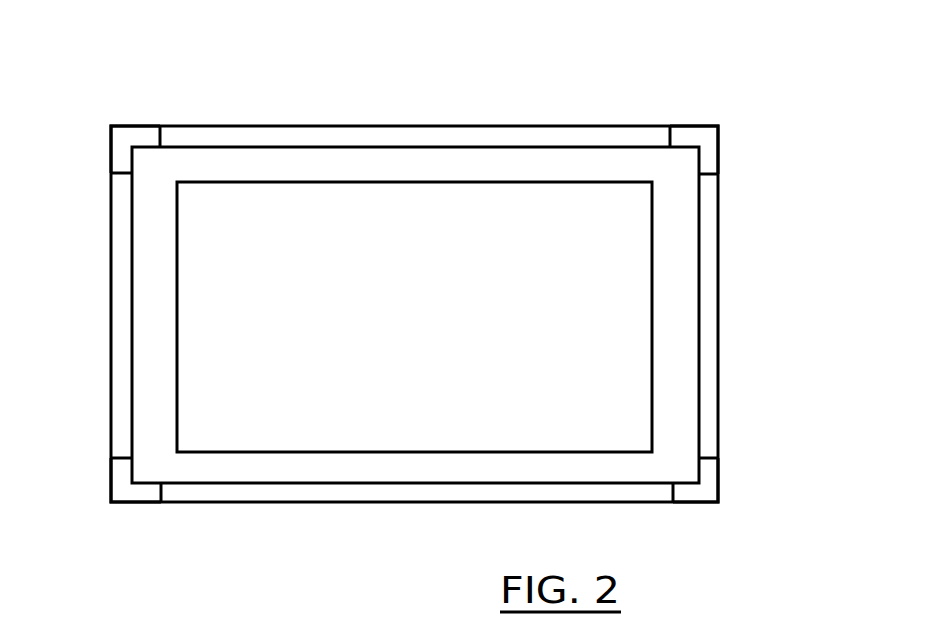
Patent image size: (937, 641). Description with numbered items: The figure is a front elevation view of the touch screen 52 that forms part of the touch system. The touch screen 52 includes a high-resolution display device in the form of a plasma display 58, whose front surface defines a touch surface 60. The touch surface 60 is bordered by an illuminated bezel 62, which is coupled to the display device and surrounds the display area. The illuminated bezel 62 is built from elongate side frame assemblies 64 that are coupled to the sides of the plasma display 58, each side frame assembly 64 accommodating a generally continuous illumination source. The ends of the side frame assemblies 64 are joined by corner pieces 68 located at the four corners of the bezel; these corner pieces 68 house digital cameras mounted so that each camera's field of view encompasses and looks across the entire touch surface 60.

The touch screen 52 is at (673, 100).
The plasma display 58 is at (541, 212).
The touch surface 60 is at (417, 337).
The illuminated bezel 62 is at (720, 305).
The side frame assemblies 64 is at (398, 134).
The corner pieces 68 is at (130, 132).